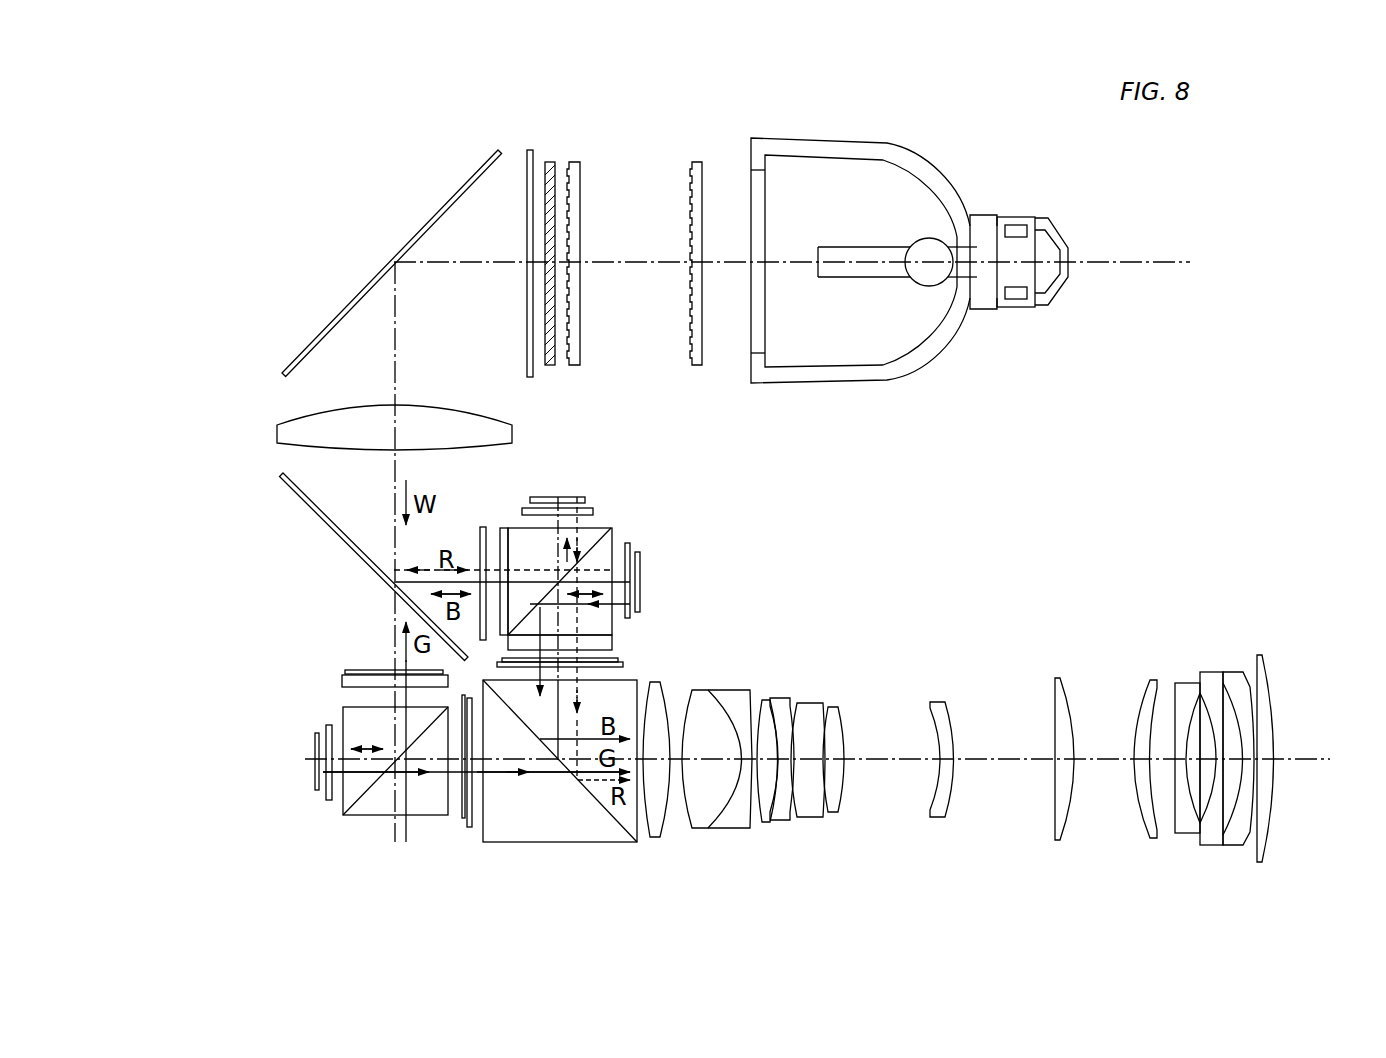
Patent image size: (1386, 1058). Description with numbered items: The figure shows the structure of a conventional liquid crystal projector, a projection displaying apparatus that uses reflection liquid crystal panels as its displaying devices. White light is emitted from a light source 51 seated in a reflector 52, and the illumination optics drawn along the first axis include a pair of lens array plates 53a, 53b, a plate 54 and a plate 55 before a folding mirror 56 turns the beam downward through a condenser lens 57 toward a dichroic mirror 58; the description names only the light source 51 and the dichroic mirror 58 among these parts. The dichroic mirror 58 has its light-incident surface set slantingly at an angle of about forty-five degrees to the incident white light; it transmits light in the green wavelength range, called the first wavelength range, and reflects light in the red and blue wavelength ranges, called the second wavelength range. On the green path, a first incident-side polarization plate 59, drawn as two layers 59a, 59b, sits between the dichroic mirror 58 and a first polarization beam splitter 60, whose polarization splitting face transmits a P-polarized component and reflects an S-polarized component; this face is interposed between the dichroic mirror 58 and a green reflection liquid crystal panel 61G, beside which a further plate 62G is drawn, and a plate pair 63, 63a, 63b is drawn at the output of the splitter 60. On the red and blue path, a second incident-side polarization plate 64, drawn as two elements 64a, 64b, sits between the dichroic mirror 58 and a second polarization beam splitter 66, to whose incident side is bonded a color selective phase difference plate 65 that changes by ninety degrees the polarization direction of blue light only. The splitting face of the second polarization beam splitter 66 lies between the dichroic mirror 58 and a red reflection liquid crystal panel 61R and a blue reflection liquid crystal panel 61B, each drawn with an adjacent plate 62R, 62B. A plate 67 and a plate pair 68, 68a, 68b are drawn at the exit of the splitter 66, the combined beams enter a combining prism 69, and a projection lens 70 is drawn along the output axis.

The light source 51 is at (890, 253).
The reflector 52 is at (855, 147).
The first fly-eye lens array 53a is at (696, 162).
The second fly-eye lens array 53b is at (575, 162).
The polarization conversion element 54 is at (550, 160).
The condenser lens plate 55 is at (533, 150).
The mirror 56 is at (407, 233).
The condenser lens 57 is at (297, 427).
The dichroic mirror 58 is at (300, 502).
The first incident-side polarization plate 59 is at (200, 582).
The polarizing plate 59a is at (340, 683).
The polarizing plate 59b is at (343, 672).
The first polarization beam splitter 60 is at (343, 717).
The green reflection liquid crystal panel 61G is at (316, 750).
The quarter-wave plate for green 62G is at (322, 795).
The polarizing plate unit 63 is at (517, 910).
The polarizing plate 63a is at (470, 828).
The polarizing plate 63b is at (462, 820).
The second incident-side polarization plate 64 is at (582, 452).
The color-selective phase plate 64a is at (505, 528).
The color-selective phase plate 64b is at (483, 527).
The color selective phase difference plate 65 is at (495, 555).
The second polarization beam splitter 66 is at (605, 542).
The phase plate 67 is at (603, 640).
The polarizing plate unit 68 is at (768, 620).
The polarizing plate 68a is at (620, 663).
The color-selective phase plate 68b is at (617, 658).
The color combining polarization beam splitter 69 is at (555, 822).
The red reflection liquid crystal panel 61R is at (587, 498).
The quarter-wave plate for red 62R is at (595, 510).
The blue reflection liquid crystal panel 61B is at (642, 573).
The quarter-wave plate for blue 62B is at (643, 548).
The projection lens 70 is at (1268, 885).